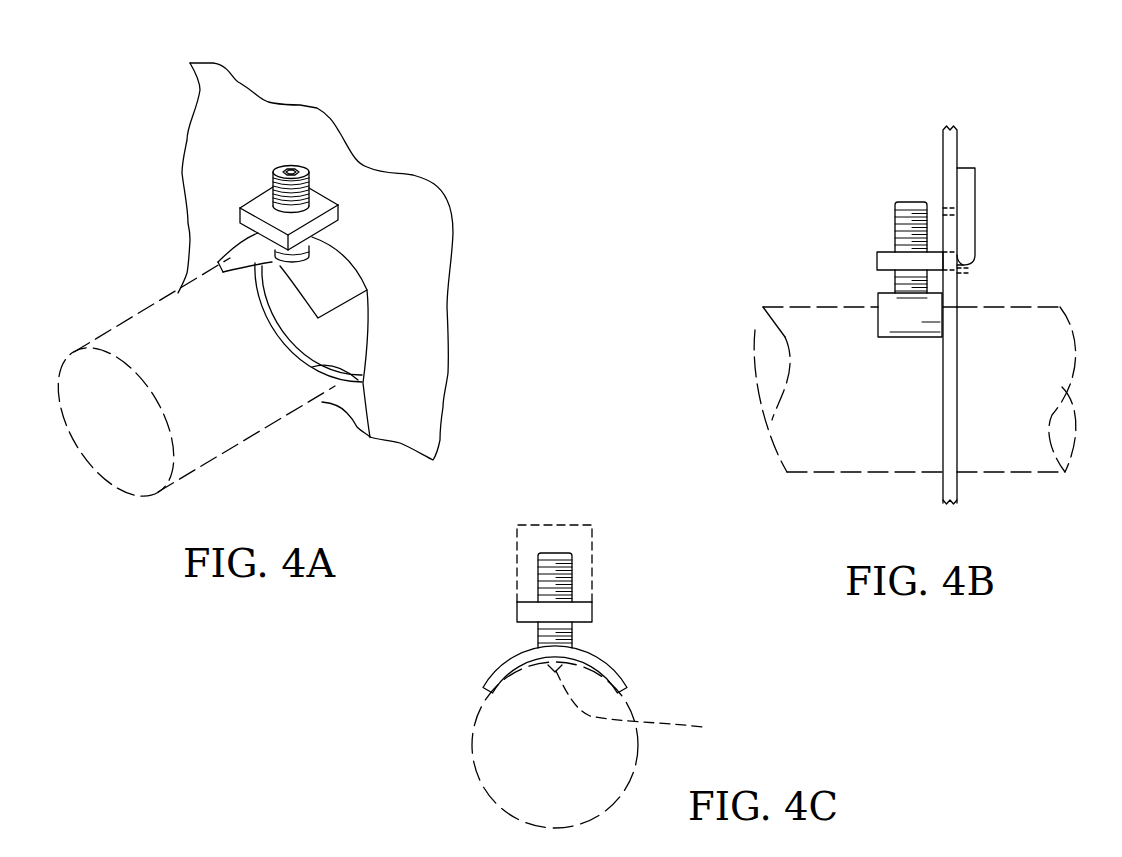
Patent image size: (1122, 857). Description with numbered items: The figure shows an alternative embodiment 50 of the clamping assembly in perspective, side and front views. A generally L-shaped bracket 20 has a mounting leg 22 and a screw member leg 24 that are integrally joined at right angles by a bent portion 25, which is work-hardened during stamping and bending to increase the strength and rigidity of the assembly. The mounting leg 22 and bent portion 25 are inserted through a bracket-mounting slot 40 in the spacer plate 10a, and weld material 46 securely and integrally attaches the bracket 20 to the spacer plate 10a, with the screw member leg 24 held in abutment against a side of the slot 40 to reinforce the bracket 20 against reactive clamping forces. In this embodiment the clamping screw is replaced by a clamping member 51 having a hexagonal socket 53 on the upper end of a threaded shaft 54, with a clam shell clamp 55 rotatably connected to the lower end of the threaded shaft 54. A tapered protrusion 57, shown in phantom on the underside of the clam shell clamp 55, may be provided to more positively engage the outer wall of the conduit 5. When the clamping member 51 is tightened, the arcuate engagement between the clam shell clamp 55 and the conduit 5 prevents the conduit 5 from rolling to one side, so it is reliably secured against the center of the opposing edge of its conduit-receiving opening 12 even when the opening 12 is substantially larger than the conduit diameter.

In FIG. 4A, the conduit 5 is at (228, 384).
In FIG. 4B, the conduit 5 is at (883, 405).
In FIG. 4C, the conduit 5 is at (541, 753).
In FIG. 4B, the spacer plate 10a is at (914, 285).
In FIG. 4A, the conduit-receiving opening 12 is at (370, 440).
In FIG. 4B, the L-shaped bracket 20 is at (1003, 195).
In FIG. 4B, the mounting leg 22 is at (968, 197).
In FIG. 4C, the mounting leg 22 is at (582, 543).
In FIG. 4A, the screw member leg 24 is at (248, 222).
In FIG. 4B, the screw member leg 24 is at (883, 257).
In FIG. 4C, the screw member leg 24 is at (527, 613).
In FIG. 4B, the bent portion 25 is at (966, 264).
In FIG. 4B, the bracket-mounting slot 40 is at (963, 273).
In FIG. 4B, the weld material 46 is at (943, 208).
In FIG. 4A, the alternative embodiment of the clamping assembly 50 is at (262, 150).
In FIG. 4B, the alternative embodiment of the clamping assembly 50 is at (860, 211).
In FIG. 4C, the alternative embodiment of the clamping assembly 50 is at (553, 554).
In FIG. 4A, the clamping member 51 is at (262, 168).
In FIG. 4B, the clamping member 51 is at (886, 223).
In FIG. 4A, the hexagonal socket 53 is at (277, 168).
In FIG. 4C, the hexagonal socket 53 is at (573, 578).
In FIG. 4A, the threaded shaft 54 is at (272, 212).
In FIG. 4C, the threaded shaft 54 is at (572, 633).
In FIG. 4A, the clam shell clamp 55 is at (340, 268).
In FIG. 4B, the clam shell clamp 55 is at (897, 318).
In FIG. 4C, the clam shell clamp 55 is at (500, 678).
In FIG. 4C, the tapered protrusion 57 is at (642, 703).